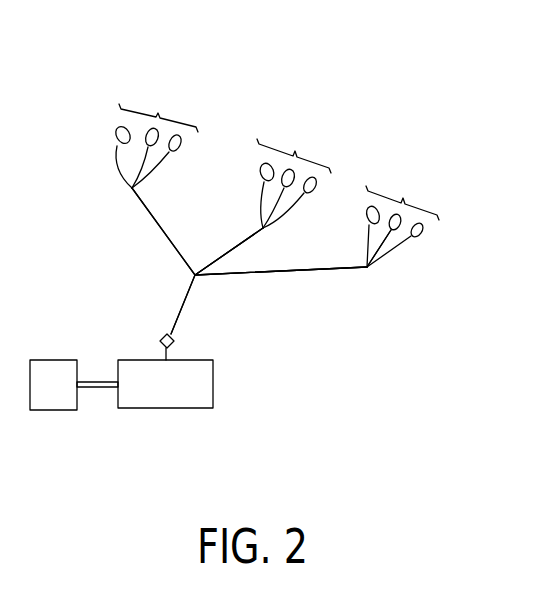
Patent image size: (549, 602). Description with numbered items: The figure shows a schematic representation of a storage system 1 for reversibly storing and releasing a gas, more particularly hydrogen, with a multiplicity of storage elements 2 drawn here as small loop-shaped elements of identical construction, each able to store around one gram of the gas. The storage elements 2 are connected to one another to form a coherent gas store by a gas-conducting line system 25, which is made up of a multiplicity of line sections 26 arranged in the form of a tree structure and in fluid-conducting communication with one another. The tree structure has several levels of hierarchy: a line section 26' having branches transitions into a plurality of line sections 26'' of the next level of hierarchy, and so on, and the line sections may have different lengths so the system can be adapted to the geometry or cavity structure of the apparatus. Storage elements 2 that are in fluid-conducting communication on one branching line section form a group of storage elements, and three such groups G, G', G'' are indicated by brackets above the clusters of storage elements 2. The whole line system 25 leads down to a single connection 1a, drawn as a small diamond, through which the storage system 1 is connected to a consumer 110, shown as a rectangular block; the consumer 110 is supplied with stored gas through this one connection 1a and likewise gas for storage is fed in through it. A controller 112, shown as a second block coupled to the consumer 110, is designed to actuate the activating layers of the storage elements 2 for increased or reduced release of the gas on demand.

The storage system 1 is at (149, 88).
The connection 1a is at (162, 333).
The storage element 2 is at (265, 179).
The gas-conducting line system 25 is at (283, 292).
The line section 26 is at (206, 309).
The line section having branches 26' is at (279, 289).
The line section of the next level of hierarchy 26'' is at (399, 283).
The consumer 110 is at (168, 410).
The controller 112 is at (42, 412).
The group of storage elements G is at (158, 104).
The group of storage elements G' is at (294, 141).
The group of storage elements G'' is at (405, 182).